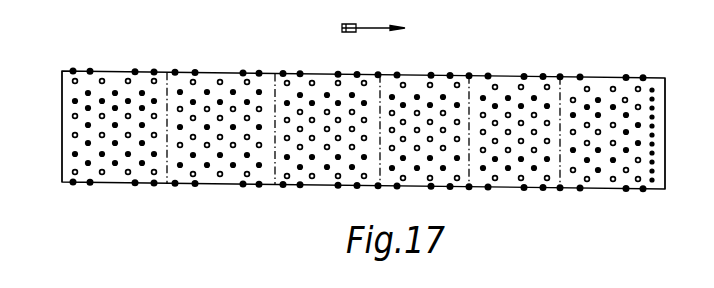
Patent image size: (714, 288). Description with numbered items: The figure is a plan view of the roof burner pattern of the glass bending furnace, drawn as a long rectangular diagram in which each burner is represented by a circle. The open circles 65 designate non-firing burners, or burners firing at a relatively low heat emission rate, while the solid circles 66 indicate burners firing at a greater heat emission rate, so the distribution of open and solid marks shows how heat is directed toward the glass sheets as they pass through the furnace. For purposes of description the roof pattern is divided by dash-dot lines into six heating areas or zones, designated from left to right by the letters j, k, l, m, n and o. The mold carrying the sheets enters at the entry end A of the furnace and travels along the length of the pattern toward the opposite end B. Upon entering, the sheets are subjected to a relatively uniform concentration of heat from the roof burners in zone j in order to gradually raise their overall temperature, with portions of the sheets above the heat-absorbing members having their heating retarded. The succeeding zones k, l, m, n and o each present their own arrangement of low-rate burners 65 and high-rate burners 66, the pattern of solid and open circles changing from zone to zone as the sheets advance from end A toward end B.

The open circles 65 is at (311, 80).
The solid circles 66 is at (326, 171).
The heating zone j is at (139, 114).
The heating zone k is at (245, 115).
The heating zone l is at (346, 115).
The heating zone m is at (438, 116).
The heating zone n is at (535, 118).
The heating zone o is at (627, 115).
The entry end A is at (40, 126).
The exit end B is at (677, 133).